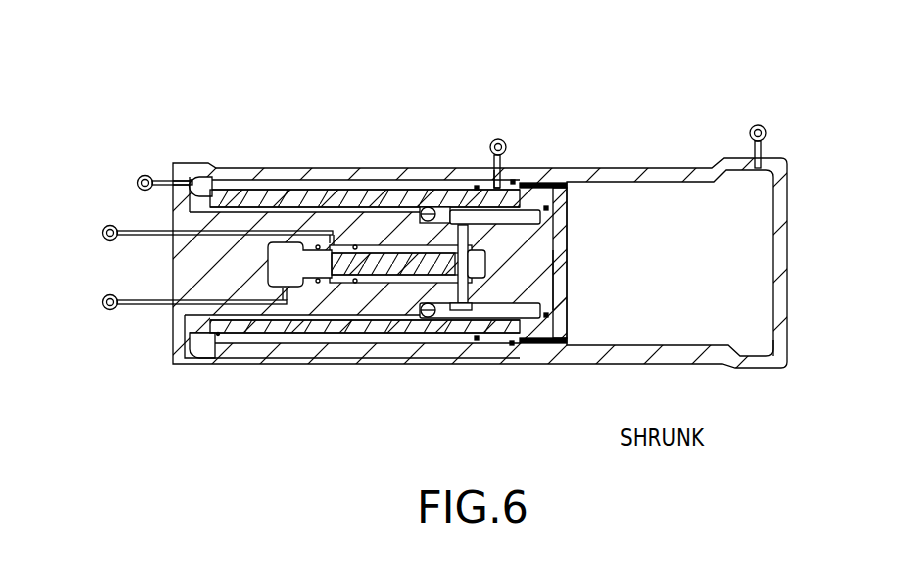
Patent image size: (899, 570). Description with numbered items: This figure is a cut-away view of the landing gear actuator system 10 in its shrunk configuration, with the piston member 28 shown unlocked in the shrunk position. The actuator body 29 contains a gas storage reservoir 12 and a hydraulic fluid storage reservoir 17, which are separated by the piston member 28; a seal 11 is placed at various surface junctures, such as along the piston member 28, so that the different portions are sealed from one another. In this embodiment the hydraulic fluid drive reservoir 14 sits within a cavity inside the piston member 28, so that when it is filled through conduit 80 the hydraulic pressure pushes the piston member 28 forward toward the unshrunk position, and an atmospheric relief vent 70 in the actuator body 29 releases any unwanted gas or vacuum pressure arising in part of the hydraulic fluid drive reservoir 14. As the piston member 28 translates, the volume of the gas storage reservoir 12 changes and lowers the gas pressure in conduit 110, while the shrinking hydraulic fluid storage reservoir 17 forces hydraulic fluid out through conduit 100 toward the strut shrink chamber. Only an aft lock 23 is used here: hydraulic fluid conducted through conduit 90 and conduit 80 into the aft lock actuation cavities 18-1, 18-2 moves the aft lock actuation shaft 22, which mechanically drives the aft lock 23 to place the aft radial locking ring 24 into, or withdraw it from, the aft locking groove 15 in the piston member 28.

The landing gear actuator system 10 is at (556, 60).
The seal 11 is at (320, 245).
The gas storage reservoir 12 is at (590, 324).
The hydraulic fluid drive reservoir 14 is at (555, 259).
The aft locking groove 15 is at (218, 336).
The hydraulic fluid storage reservoir 17 is at (493, 184).
The aft lock actuation cavity 18-1 is at (338, 246).
The aft lock actuation cavity 18-2 is at (286, 280).
The aft lock actuation shaft 22 is at (306, 249).
The aft lock 23 is at (452, 236).
The aft radial locking ring 24 is at (424, 209).
The piston member 28 is at (562, 299).
The actuator body 29 is at (784, 350).
The atmospheric relief vent 70 is at (143, 176).
The conduit 80 is at (102, 237).
The conduit 90 is at (102, 304).
The conduit 100 is at (501, 139).
The conduit 110 is at (760, 125).